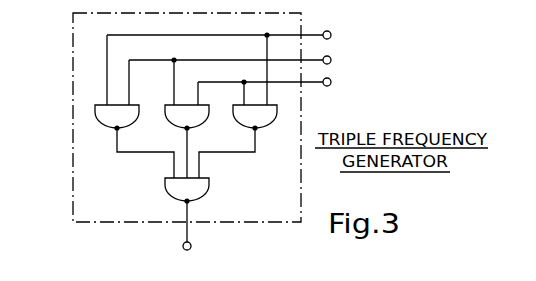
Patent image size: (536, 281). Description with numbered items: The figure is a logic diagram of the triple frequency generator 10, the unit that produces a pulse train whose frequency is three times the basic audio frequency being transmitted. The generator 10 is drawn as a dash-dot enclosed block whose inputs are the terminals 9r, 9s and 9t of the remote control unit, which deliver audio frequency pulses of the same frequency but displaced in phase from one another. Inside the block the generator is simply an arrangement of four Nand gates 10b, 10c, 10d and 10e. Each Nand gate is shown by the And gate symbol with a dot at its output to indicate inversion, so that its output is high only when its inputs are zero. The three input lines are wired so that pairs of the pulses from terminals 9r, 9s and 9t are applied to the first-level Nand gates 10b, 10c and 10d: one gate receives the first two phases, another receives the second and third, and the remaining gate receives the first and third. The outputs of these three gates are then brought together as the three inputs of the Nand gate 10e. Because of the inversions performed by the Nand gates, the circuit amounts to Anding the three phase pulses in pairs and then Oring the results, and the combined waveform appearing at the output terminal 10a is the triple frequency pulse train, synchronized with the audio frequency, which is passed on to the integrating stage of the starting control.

The triple frequency generator 10 is at (73, 45).
The output terminal 10a is at (191, 246).
The Nand gate 10b is at (131, 115).
The Nand gate 10c is at (201, 115).
The Nand gate 10d is at (269, 115).
The Nand gate 10e is at (205, 186).
The terminal 9r is at (331, 35).
The terminal 9s is at (331, 60).
The terminal 9t is at (331, 82).